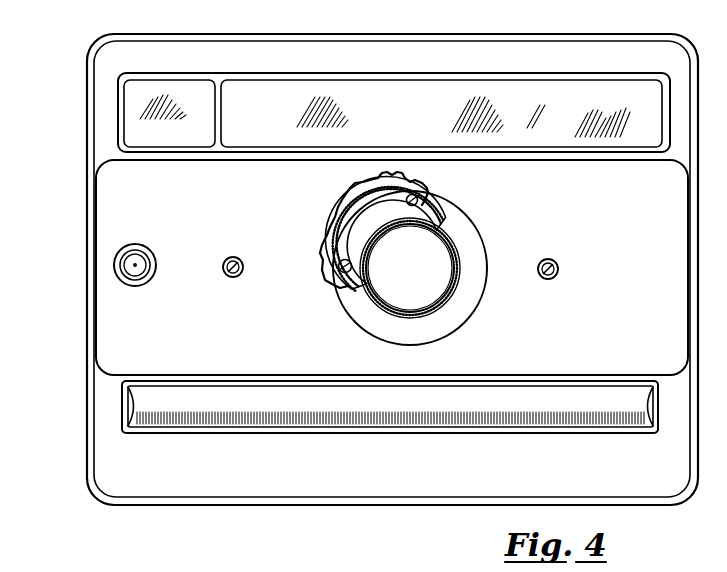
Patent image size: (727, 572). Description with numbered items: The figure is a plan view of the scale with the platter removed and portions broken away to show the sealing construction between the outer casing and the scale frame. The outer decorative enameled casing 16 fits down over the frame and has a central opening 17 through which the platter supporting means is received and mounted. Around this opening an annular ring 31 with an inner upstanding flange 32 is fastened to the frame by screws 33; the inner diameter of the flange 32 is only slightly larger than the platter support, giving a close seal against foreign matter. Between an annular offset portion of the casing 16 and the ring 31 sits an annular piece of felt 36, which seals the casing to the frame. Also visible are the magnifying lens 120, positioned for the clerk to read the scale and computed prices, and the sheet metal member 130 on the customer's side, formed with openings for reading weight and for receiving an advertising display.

The casing 16 is at (103, 318).
The central opening 17 is at (389, 300).
The annular ring 31 is at (353, 233).
The inner upstanding flange 32 is at (386, 224).
The screws 33 is at (338, 264).
The annular piece of felt 36 is at (372, 222).
The magnifying lens 120 is at (224, 407).
The sheet metal member 130 is at (411, 100).